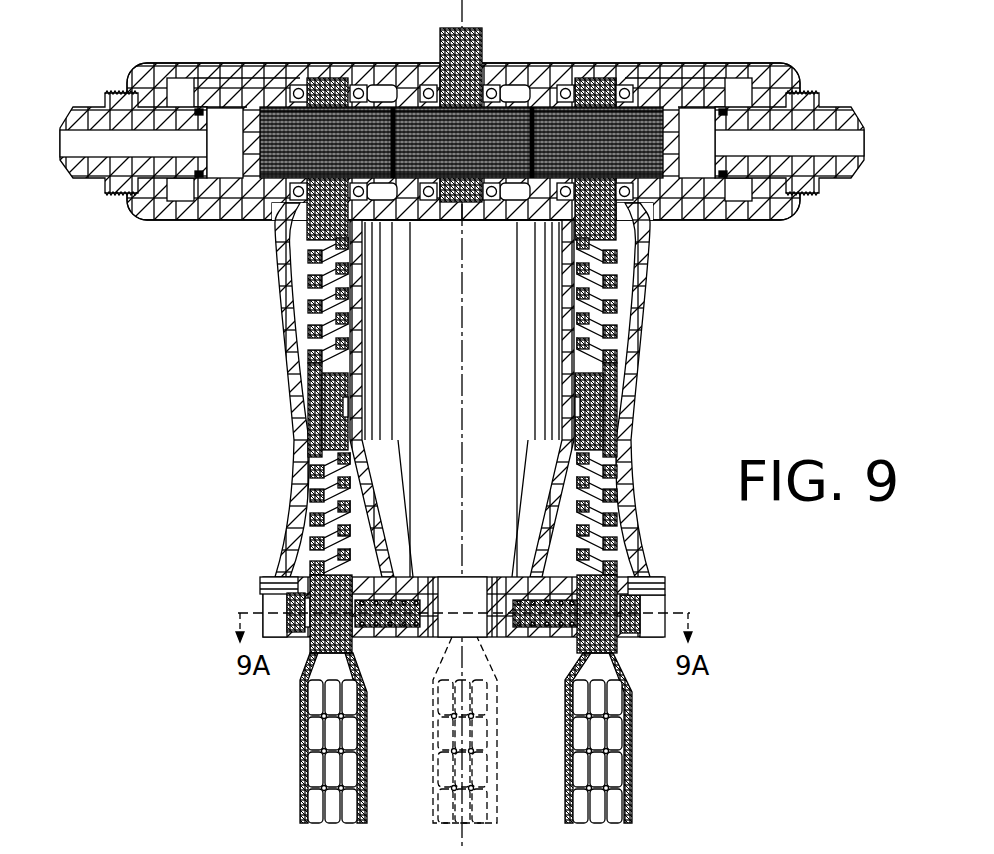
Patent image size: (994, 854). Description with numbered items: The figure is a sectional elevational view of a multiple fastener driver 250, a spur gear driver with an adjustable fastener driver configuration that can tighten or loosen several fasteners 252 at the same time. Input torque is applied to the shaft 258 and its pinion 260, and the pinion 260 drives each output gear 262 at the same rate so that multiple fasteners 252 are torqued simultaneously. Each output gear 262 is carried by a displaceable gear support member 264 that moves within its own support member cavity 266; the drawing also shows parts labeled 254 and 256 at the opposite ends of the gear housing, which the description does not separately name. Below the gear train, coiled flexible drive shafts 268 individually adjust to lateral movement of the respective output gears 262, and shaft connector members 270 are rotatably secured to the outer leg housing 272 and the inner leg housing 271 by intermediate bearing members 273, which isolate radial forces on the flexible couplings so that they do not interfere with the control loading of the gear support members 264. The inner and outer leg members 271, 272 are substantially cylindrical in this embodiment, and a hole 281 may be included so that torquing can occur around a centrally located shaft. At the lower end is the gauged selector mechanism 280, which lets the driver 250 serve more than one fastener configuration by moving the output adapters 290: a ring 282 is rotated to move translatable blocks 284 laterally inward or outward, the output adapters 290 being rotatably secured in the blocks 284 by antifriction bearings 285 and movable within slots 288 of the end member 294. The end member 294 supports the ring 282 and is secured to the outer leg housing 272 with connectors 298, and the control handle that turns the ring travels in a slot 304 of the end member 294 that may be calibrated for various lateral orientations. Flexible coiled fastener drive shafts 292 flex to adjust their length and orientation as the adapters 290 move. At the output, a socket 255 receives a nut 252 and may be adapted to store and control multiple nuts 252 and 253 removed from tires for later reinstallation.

The multiple fastener driver 250 is at (830, 38).
The fastener 252 is at (335, 696).
The nut 253 is at (315, 768).
The right fitting 254 is at (835, 117).
The socket 255 is at (305, 820).
The left fitting 256 is at (90, 167).
The shaft 258 is at (484, 50).
The pinion 260 is at (498, 133).
The output gear 262 is at (548, 140).
The displaceable gear support member 264 is at (212, 195).
The support member cavity 266 is at (185, 97).
The coiled flexible drive shaft 268 is at (302, 340).
The shaft connector member 270 is at (598, 422).
The inner leg housing 271 is at (614, 307).
The outer leg housing 272 is at (616, 460).
The intermediate bearing member 273 is at (311, 393).
The gauged selector mechanism 280 is at (200, 586).
The hole 281 is at (461, 637).
The ring 282 is at (290, 606).
The translatable block 284 is at (356, 666).
The antifriction bearing 285 is at (577, 648).
The slot 288 is at (303, 637).
The output adapter 290 is at (605, 587).
The flexible coiled fastener drive shaft 292 is at (310, 500).
The end member 294 is at (266, 637).
The connector 298 is at (674, 594).
The slot 304 is at (655, 636).